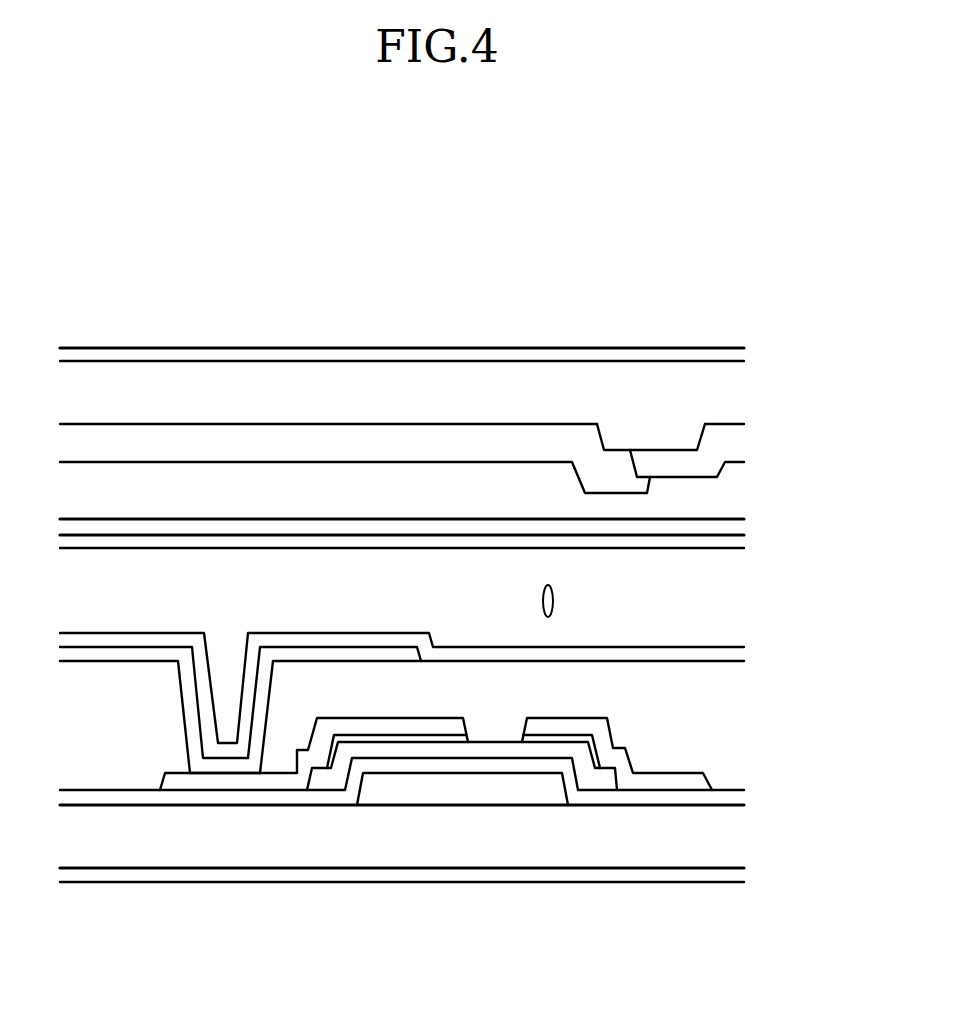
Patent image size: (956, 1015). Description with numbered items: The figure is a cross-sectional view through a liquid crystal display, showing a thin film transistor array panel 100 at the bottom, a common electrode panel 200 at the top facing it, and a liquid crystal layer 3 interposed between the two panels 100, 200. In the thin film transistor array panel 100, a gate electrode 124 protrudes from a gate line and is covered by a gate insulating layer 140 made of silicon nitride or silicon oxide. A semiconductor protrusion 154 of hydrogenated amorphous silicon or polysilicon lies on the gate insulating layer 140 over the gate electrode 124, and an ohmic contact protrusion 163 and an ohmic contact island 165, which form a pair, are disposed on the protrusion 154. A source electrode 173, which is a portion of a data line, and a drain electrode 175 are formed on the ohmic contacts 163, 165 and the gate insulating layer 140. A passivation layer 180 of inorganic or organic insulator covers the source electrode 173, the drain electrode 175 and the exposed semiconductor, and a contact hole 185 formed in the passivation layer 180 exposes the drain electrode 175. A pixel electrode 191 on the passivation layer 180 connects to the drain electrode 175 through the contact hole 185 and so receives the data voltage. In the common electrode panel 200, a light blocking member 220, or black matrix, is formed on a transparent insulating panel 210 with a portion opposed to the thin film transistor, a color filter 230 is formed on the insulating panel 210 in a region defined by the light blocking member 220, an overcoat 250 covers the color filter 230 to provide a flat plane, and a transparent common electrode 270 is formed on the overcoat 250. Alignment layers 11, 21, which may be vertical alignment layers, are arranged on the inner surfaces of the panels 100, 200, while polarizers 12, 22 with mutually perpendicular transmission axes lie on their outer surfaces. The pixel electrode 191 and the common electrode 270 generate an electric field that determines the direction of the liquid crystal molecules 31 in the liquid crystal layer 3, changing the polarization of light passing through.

The liquid crystal layer 3 is at (667, 596).
The alignment layer 11 is at (680, 658).
The polarizer 12 is at (436, 873).
The alignment layer 21 is at (143, 543).
The polarizer 22 is at (728, 356).
The liquid crystal molecules 31 is at (555, 600).
The thin film transistor array panel 100 is at (441, 779).
The gate electrode 124 is at (445, 788).
The gate insulating layer 140 is at (177, 798).
The protrusion 154 is at (511, 752).
The protrusion 163 is at (597, 772).
The ohmic contact island 165 is at (381, 740).
The source electrode 173 is at (684, 775).
The drain electrode 175 is at (257, 783).
The passivation layer 180 is at (650, 728).
The contact hole 185 is at (270, 706).
The pixel electrode 191 is at (98, 655).
The common electrode panel 200 is at (441, 420).
The insulating panel 210 is at (415, 392).
The light blocking member 220 is at (652, 437).
The color filter 230 is at (320, 447).
The overcoat 250 is at (235, 490).
The common electrode 270 is at (510, 530).